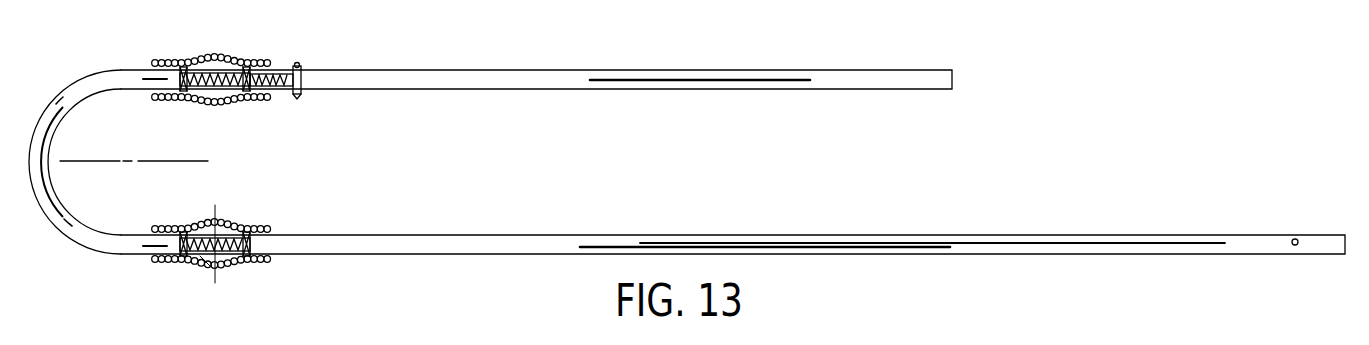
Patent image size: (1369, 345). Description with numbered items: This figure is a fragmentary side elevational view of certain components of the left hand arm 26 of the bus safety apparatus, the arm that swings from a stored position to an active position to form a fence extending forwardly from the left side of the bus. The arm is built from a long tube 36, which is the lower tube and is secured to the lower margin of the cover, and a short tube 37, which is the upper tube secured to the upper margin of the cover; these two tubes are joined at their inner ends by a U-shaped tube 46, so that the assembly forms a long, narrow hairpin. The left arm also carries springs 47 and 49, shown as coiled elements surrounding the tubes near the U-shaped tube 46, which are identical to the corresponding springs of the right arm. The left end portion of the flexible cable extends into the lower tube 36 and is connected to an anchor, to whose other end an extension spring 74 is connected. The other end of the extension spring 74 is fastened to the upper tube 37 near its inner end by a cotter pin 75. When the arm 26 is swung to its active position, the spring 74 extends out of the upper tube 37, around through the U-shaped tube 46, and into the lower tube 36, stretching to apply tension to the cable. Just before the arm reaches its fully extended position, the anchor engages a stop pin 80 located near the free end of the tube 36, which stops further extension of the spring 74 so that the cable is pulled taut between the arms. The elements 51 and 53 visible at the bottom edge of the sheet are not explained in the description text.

The left hand arm 26 is at (683, 179).
The long tube 36 is at (446, 256).
The short tube 37 is at (603, 91).
The U-shaped tube 46 is at (62, 96).
The spring 47 is at (233, 226).
The spring 49 is at (230, 57).
The extension spring 74 is at (207, 262).
The cotter pin 75 is at (302, 63).
The stop pin 80 is at (1299, 240).
The element 51 is at (181, 341).
The element 53 is at (281, 341).